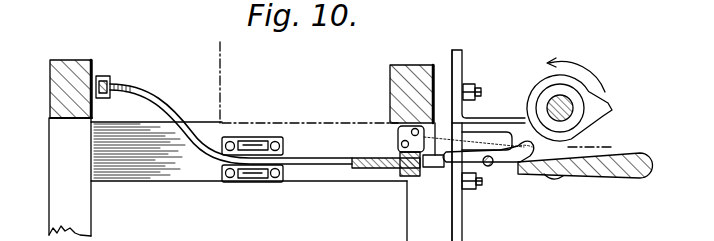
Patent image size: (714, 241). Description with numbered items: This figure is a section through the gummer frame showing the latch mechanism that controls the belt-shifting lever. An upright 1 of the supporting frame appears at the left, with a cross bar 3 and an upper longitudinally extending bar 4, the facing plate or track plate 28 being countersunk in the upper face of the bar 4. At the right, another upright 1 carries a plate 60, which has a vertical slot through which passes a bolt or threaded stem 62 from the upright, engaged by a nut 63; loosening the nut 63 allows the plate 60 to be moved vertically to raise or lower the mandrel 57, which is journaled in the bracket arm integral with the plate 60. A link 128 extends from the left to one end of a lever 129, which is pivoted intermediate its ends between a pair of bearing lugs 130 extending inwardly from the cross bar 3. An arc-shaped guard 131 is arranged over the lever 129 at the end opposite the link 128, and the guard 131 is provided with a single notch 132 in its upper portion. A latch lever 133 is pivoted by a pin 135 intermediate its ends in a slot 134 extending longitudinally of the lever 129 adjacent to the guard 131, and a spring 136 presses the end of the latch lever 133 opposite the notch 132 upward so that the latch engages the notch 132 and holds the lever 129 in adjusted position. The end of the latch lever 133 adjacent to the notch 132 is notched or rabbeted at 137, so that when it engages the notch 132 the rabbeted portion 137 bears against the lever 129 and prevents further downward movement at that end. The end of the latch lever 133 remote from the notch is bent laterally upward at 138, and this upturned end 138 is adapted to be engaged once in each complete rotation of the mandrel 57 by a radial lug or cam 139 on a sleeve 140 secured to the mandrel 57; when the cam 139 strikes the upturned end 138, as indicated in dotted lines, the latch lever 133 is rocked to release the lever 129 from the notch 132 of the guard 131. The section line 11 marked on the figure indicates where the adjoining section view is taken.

The uprights 1 is at (50, 174).
The cross bars 3 is at (315, 182).
The upper longitudinally extending bars 4 is at (49, 80).
The section line 11 is at (422, 90).
The facing plate or track plate 28 is at (72, 60).
The mandrel 57 is at (548, 107).
The plates 60 is at (463, 52).
The bolts or threaded stems 62 is at (481, 94).
The nut 63 is at (470, 84).
The link 128 is at (112, 81).
The lever 129 is at (636, 179).
The bearing lugs 130 is at (260, 143).
The arc-shaped guard 131 is at (404, 177).
The notch 132 is at (403, 130).
The latch lever 133 is at (480, 179).
The slot 134 is at (551, 177).
The pin 135 is at (492, 167).
The spring 136 is at (533, 176).
The rabbeted portion 137 is at (442, 168).
The upturned end 138 is at (523, 150).
The radial lug or cam 139 is at (610, 108).
The sleeve 140 is at (571, 95).